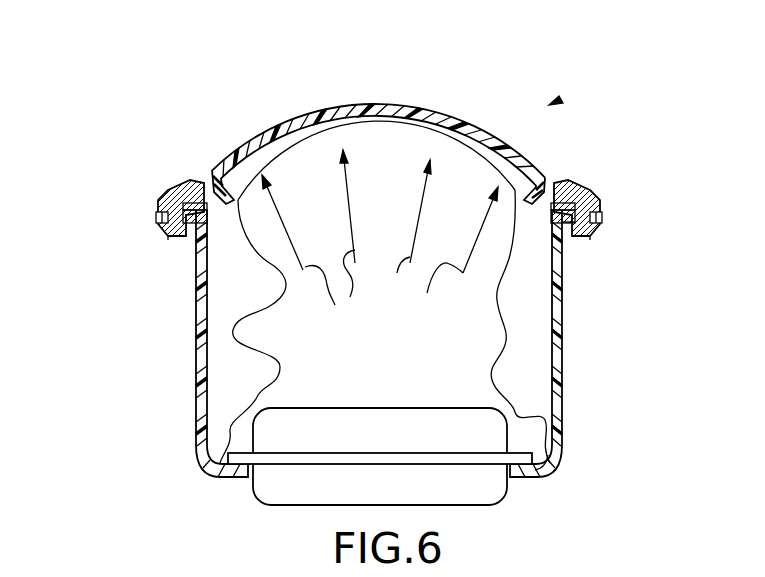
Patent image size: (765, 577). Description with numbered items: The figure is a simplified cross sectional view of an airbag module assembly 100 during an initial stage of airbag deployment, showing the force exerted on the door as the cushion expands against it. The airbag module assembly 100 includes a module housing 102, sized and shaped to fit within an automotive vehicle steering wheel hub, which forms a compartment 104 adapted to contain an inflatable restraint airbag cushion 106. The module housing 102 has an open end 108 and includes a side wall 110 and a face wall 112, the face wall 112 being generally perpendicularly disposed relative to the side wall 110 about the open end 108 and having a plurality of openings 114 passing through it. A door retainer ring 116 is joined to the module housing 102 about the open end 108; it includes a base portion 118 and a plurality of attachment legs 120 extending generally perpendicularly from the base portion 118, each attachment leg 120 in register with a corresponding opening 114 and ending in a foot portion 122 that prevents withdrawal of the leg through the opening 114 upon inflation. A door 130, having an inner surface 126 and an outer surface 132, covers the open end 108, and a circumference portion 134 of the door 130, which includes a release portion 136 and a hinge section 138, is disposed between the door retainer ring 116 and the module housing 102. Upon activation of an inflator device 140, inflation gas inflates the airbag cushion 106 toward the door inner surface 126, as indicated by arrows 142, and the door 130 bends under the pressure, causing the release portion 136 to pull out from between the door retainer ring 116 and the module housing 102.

The airbag module assembly 100 is at (565, 98).
The module housing 102 is at (564, 375).
The compartment 104 is at (537, 337).
The inflatable restraint airbag cushion 106 is at (562, 432).
The open end 108 is at (503, 300).
The side wall 110 is at (196, 342).
The face wall 112 is at (157, 215).
The openings 114 is at (188, 228).
The door retainer ring 116 is at (599, 183).
The base portion 118 is at (608, 222).
The attachment legs 120 is at (168, 188).
The foot portion 122 is at (160, 238).
The inner surface 126 is at (236, 158).
The door 130 is at (378, 97).
The outer surface 132 is at (445, 116).
The circumference portion 134 is at (280, 207).
The release portion 136 is at (222, 215).
The hinge section 138 is at (580, 185).
The inflator device 140 is at (552, 466).
The arrows 142 is at (427, 293).